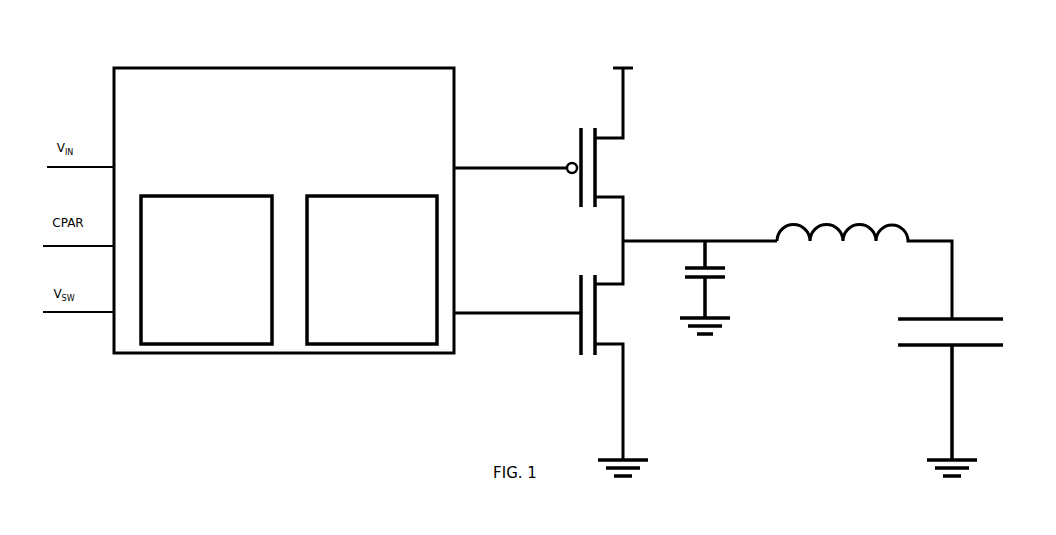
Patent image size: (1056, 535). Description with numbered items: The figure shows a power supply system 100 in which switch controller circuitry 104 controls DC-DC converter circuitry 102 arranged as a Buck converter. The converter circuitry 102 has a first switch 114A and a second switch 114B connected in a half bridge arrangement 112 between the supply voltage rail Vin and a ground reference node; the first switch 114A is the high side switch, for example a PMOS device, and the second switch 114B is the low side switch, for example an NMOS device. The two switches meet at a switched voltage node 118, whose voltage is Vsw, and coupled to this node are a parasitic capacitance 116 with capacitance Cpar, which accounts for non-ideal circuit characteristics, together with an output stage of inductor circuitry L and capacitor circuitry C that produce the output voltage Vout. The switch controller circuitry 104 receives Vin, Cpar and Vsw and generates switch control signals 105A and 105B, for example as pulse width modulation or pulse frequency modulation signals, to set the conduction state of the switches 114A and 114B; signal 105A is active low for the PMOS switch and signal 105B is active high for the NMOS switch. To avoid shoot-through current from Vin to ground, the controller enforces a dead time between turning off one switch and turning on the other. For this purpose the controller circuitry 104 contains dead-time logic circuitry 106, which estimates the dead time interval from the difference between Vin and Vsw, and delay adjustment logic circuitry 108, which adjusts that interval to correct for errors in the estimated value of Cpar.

The power supply system 100 is at (243, 42).
The DC-DC converter circuitry 102 is at (796, 78).
The switch controller circuitry 104 is at (284, 210).
The switch control signal 105A is at (549, 161).
The switch control signal 105B is at (553, 308).
The dead-time logic circuitry 106 is at (206, 270).
The delay adjustment logic circuitry 108 is at (372, 270).
The half bridge arrangement 112 is at (590, 103).
The first switch 114A is at (612, 157).
The second switch 114B is at (614, 319).
The parasitic capacitance 116 is at (720, 289).
The switched voltage node 118 is at (634, 236).